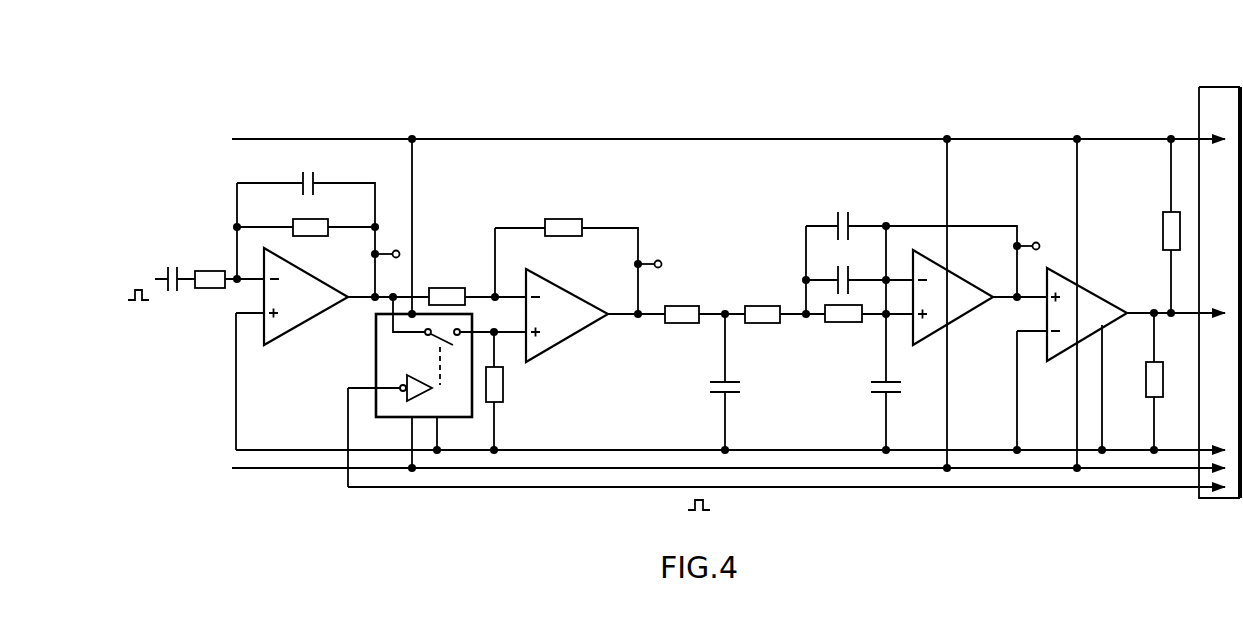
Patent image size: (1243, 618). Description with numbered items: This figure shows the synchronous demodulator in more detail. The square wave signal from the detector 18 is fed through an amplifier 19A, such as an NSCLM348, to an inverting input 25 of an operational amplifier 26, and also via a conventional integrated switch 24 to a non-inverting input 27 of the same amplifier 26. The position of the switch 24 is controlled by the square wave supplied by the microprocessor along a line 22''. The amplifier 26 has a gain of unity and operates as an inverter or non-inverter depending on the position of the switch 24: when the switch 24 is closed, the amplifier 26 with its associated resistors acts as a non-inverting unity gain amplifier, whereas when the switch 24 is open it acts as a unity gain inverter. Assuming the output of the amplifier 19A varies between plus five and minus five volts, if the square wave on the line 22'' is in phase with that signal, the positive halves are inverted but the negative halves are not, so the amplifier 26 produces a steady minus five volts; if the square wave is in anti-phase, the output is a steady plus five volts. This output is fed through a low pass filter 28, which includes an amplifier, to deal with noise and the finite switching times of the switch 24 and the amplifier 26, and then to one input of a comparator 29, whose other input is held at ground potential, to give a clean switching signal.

The detector 18 is at (174, 278).
The amplifier 19A is at (305, 310).
The integrated switch 24 is at (462, 417).
The inverting input 25 is at (510, 296).
The operational amplifier 26 is at (558, 330).
The non-inverting input 27 is at (512, 334).
The low pass filter 28 is at (899, 348).
The comparator 29 is at (1085, 296).
The line 22'' is at (524, 514).